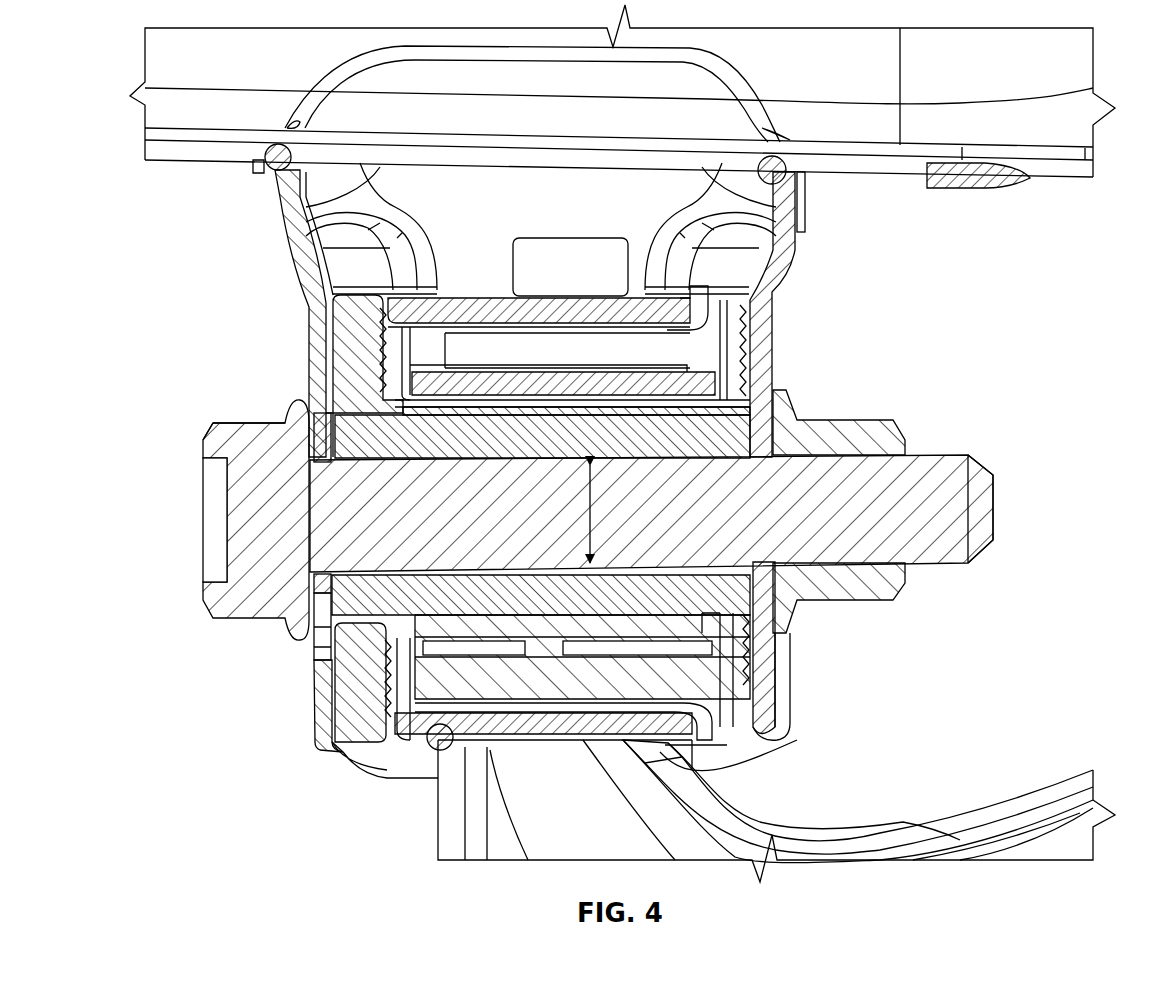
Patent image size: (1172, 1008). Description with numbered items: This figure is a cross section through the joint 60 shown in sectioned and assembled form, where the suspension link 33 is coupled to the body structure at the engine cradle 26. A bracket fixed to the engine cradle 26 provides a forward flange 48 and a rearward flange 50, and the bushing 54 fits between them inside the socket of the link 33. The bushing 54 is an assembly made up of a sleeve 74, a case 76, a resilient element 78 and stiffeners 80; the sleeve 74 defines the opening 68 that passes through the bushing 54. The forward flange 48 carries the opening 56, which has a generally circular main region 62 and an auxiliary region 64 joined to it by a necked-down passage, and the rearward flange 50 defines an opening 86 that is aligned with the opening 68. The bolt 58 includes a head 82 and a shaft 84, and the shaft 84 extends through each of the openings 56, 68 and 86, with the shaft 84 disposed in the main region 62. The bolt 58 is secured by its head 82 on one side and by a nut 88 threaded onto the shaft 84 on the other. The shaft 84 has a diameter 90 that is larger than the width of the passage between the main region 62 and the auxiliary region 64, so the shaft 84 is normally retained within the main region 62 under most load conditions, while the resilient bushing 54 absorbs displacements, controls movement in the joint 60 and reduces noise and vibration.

The engine cradle 26 is at (1052, 125).
The link 33 is at (452, 812).
The forward flange 48 is at (313, 322).
The rearward flange 50 is at (778, 317).
The bushing 54 is at (355, 697).
The opening 56 is at (318, 593).
The bolt 58 is at (255, 518).
The joint 60 is at (287, 750).
The main region 62 is at (322, 463).
The auxiliary region 64 is at (323, 647).
The opening 68 is at (473, 465).
The sleeve 74 is at (720, 435).
The case 76 is at (487, 294).
The resilient element 78 is at (362, 392).
The stiffeners 80 is at (550, 735).
The head 82 is at (230, 432).
The shaft 84 is at (918, 468).
The opening 86 is at (768, 460).
The nut 88 is at (860, 597).
The diameter 90 is at (596, 515).